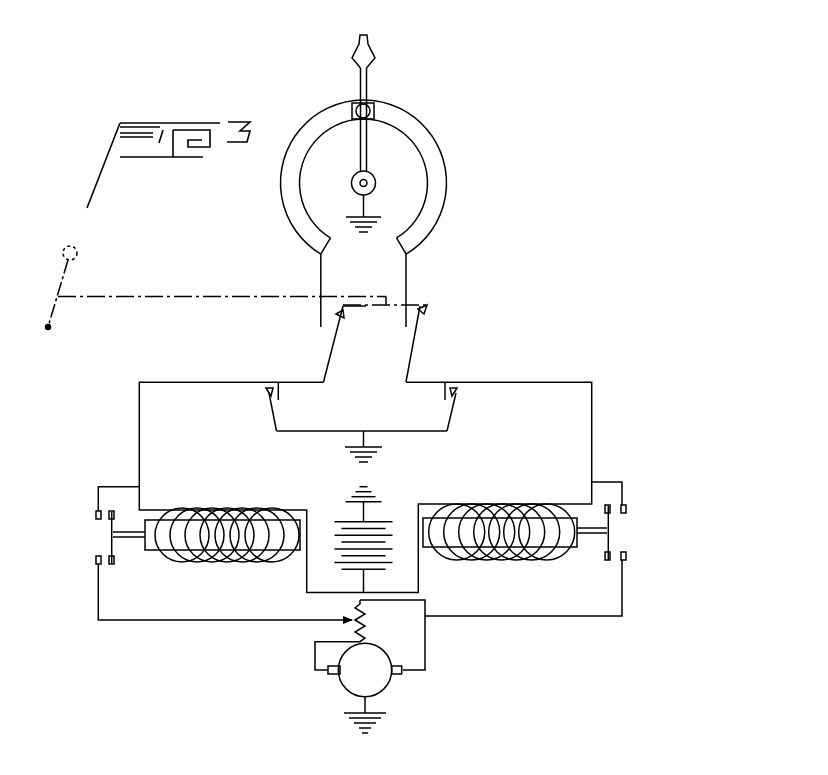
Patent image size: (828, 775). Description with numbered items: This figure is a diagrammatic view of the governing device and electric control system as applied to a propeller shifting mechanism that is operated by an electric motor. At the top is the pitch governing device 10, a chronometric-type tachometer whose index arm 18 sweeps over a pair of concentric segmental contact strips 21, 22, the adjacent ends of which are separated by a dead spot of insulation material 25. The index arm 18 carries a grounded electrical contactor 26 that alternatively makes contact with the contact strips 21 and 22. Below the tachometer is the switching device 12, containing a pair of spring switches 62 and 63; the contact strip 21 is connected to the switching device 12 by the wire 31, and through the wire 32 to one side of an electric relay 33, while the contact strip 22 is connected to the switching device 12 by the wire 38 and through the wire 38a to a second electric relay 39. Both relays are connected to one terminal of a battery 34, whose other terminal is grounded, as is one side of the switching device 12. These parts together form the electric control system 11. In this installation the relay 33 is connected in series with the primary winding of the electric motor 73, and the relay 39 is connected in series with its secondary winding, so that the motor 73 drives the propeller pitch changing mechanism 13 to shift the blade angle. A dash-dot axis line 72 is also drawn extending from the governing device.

The pitch governing device 10 is at (452, 182).
The electric control system 11 is at (598, 435).
The switching device 12 is at (485, 356).
The propeller pitch changing mechanism 13 is at (437, 637).
The index arm 18 is at (370, 55).
The contact strip 21 is at (293, 186).
The contact strip 22 is at (423, 150).
The dead spot of insulation material 25 is at (374, 118).
The electrical contactor 26 is at (372, 101).
The wire 31 is at (320, 277).
The wire 32 is at (245, 382).
The electric relay 33 is at (188, 510).
The battery 34 is at (390, 531).
The wire 38 is at (406, 275).
The wire 38a is at (563, 379).
The second electric relay 39 is at (528, 504).
The spring switch 62 is at (327, 320).
The spring switch 63 is at (412, 322).
The axis line 72 is at (225, 295).
The electric motor 73 is at (342, 682).